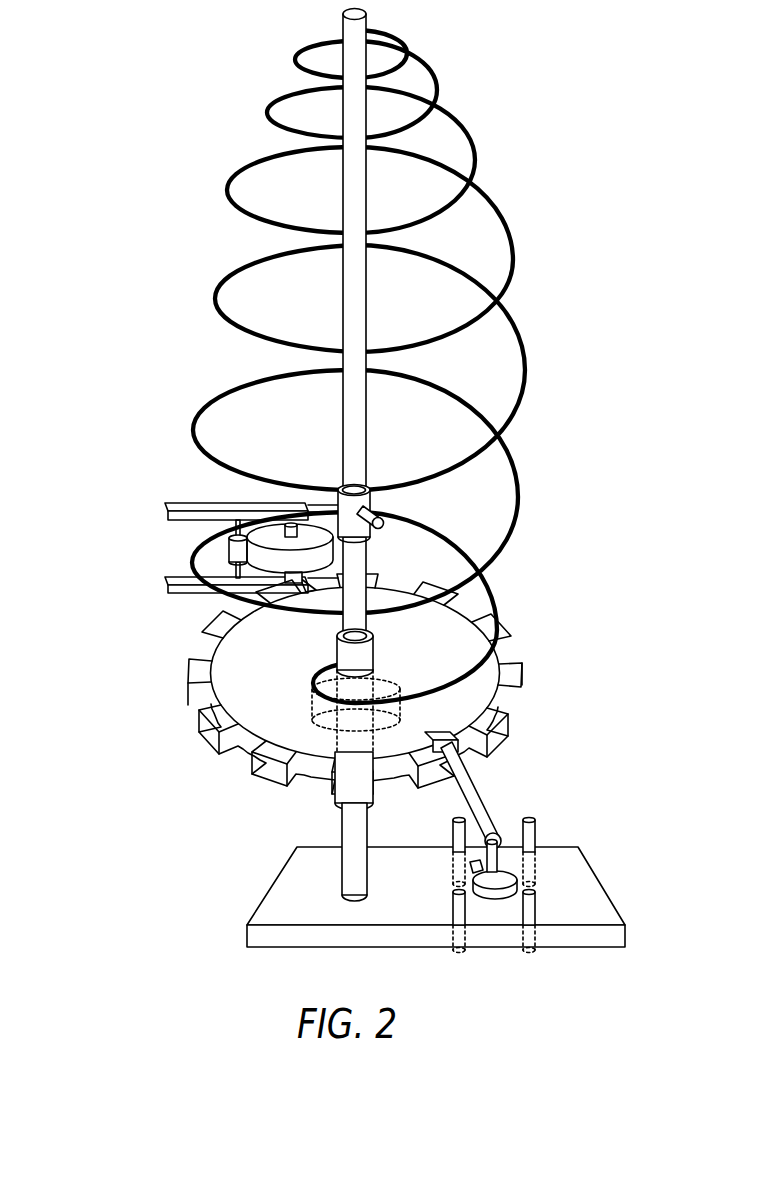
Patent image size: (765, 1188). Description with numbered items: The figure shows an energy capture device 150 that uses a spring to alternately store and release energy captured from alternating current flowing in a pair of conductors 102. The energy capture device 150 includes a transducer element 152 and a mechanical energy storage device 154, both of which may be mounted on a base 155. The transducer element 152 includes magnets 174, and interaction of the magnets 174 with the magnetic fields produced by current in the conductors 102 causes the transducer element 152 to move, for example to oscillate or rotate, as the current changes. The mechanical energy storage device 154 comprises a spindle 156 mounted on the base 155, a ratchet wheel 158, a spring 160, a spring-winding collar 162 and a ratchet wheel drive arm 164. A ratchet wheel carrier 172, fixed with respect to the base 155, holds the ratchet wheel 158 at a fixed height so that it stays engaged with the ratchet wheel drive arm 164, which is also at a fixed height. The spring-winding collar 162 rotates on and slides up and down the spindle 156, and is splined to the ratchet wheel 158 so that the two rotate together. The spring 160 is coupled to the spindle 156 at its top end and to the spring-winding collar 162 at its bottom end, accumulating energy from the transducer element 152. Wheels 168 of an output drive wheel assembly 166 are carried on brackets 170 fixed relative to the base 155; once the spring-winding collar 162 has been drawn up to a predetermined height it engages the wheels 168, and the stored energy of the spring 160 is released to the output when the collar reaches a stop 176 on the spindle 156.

The conductors 102 is at (527, 819).
The energy capture device 150 is at (364, 747).
The transducer element 152 is at (515, 856).
The mechanical energy storage device 154 is at (286, 366).
The base 155 is at (592, 950).
The spindle 156 is at (343, 26).
The ratchet wheel 158 is at (291, 700).
The spring 160 is at (228, 190).
The spring-winding collar 162 is at (337, 650).
The ratchet wheel drive arm 164 is at (455, 783).
The output drive wheel assembly 166 is at (196, 603).
The wheels 168 is at (255, 550).
The brackets 170 is at (168, 510).
The ratchet wheel carrier 172 is at (388, 689).
The magnets 174 is at (503, 893).
The stop 176 is at (372, 512).